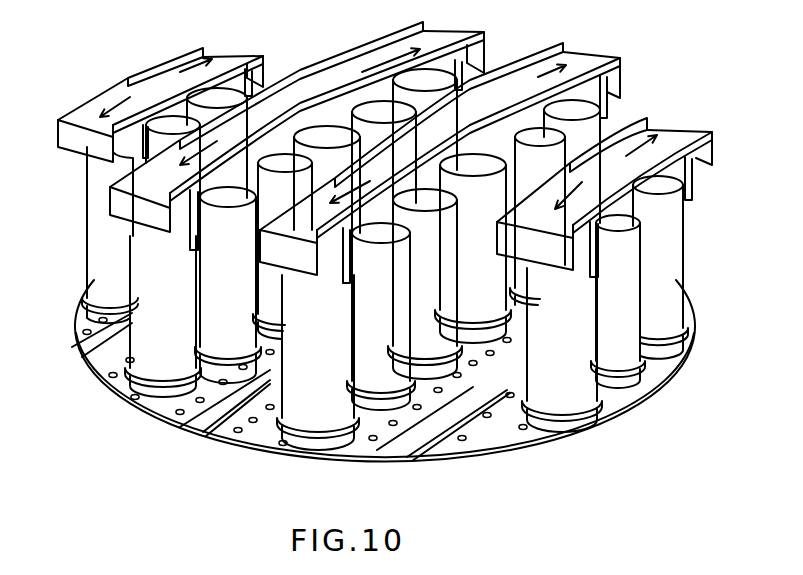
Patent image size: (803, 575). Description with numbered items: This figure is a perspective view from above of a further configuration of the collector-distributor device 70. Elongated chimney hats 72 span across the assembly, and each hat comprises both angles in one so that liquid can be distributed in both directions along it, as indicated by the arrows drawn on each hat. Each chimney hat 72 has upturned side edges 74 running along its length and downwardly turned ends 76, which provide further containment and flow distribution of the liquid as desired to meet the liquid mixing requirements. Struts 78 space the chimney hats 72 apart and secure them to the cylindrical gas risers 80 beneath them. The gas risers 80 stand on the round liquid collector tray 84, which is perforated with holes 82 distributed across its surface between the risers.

The collector-distributor device 70 is at (97, 47).
The chimney hats 72 is at (218, 61).
The upturned side edges 74 is at (80, 104).
The downwardly turned ends 76 is at (75, 143).
The struts 78 is at (690, 203).
The gas risers 80 is at (150, 280).
The holes 82 is at (110, 375).
The liquid collector tray 84 is at (613, 402).